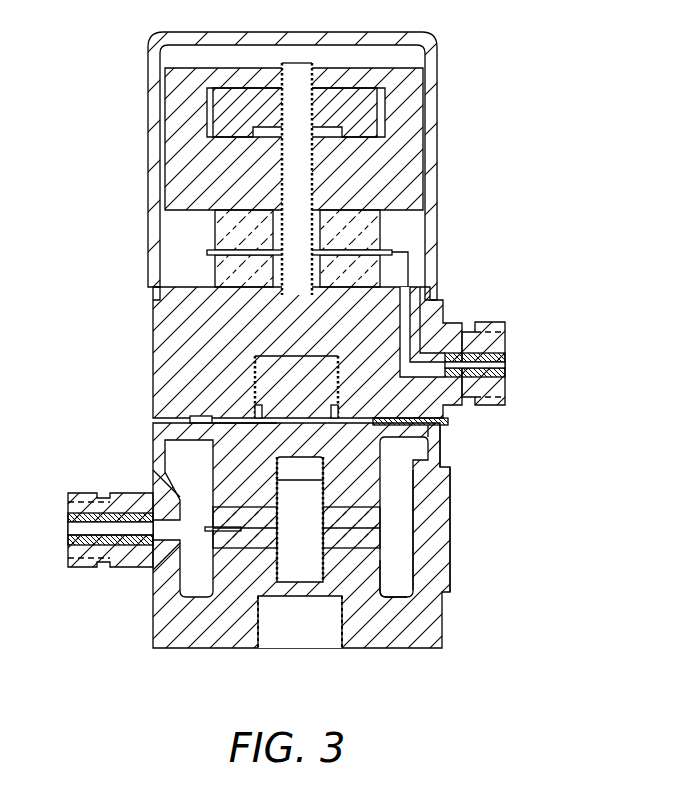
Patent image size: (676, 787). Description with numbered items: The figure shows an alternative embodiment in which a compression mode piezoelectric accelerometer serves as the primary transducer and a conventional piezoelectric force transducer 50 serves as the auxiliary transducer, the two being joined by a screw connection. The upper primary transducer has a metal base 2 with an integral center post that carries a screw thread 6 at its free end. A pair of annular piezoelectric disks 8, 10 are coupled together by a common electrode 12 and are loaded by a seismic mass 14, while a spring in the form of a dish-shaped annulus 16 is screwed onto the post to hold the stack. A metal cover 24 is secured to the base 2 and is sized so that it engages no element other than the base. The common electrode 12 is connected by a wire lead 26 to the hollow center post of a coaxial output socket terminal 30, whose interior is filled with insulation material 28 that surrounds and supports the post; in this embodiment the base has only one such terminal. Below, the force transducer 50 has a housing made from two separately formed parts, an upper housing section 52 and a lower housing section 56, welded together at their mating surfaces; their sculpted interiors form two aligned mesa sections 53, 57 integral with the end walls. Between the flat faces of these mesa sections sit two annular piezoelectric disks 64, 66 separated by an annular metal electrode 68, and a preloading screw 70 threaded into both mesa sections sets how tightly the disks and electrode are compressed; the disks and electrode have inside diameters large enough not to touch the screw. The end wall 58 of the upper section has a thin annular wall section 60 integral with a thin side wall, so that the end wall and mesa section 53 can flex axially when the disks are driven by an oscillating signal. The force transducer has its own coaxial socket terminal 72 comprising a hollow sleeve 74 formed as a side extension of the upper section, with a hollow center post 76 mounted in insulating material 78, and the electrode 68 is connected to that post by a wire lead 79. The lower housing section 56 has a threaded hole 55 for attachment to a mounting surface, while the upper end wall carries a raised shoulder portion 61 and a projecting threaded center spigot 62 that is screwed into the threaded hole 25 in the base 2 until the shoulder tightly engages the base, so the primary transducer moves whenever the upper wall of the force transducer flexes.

The metal base 2 is at (140, 327).
The screw thread 6 is at (297, 70).
The annular piezoelectric disk 8 is at (214, 229).
The annular piezoelectric disk 10 is at (214, 268).
The common electrode 12 is at (206, 252).
The seismic mass 14 is at (178, 162).
The dish-shaped annulus spring 16 is at (358, 93).
The metal housing or cover 24 is at (146, 74).
The threaded hole 25 is at (266, 372).
The wire lead 26 is at (412, 268).
The insulation material 28 is at (506, 366).
The coaxial output socket terminal 30 is at (498, 335).
The force transducer 50 is at (446, 621).
The upper housing section 52 is at (430, 446).
The mesa section 53 is at (430, 480).
The threaded hole 55 is at (262, 641).
The lower housing section 56 is at (440, 546).
The mesa section 57 is at (385, 572).
The end wall 58 is at (426, 422).
The thin annular wall section 60 is at (232, 445).
The raised shoulder portion 61 is at (204, 419).
The threaded center spigot 62 is at (260, 383).
The annular piezoelectric disk 64 is at (232, 480).
The annular piezoelectric disk 66 is at (186, 576).
The annular metal electrode 68 is at (380, 518).
The preloading screw 70 is at (303, 570).
The coaxial socket terminal 72 is at (76, 561).
The hollow sleeve 74 is at (72, 511).
The hollow center post 76 is at (72, 528).
The insulating material 78 is at (72, 540).
The wire lead 79 is at (146, 552).